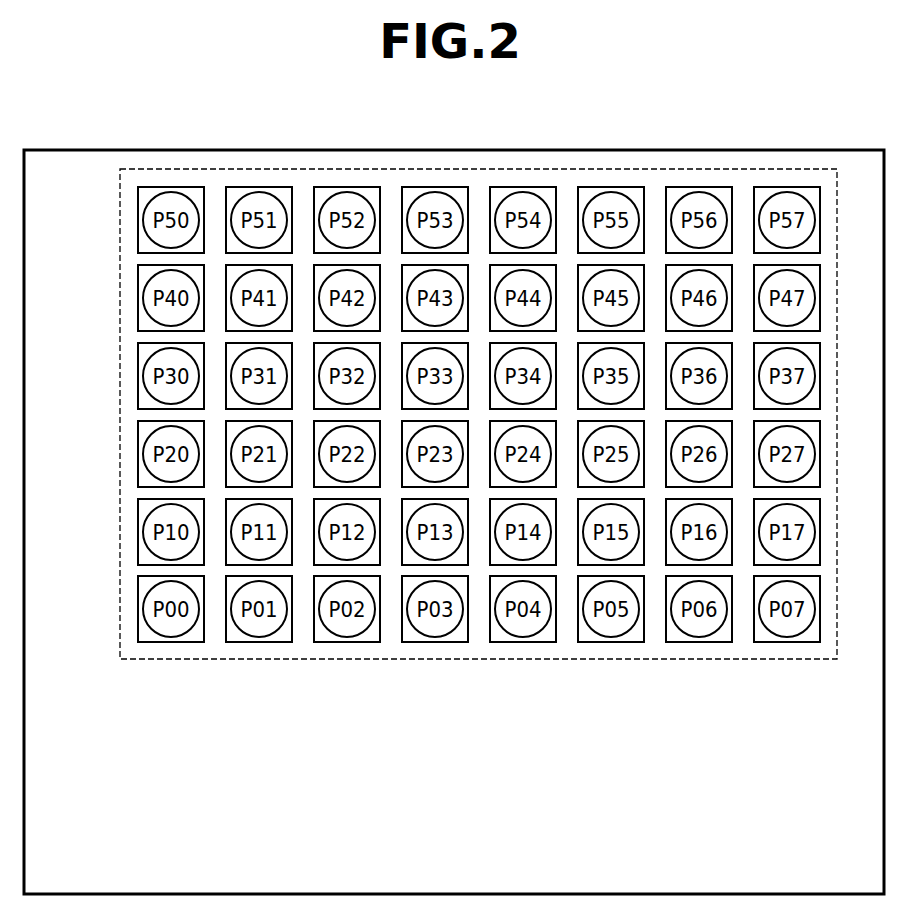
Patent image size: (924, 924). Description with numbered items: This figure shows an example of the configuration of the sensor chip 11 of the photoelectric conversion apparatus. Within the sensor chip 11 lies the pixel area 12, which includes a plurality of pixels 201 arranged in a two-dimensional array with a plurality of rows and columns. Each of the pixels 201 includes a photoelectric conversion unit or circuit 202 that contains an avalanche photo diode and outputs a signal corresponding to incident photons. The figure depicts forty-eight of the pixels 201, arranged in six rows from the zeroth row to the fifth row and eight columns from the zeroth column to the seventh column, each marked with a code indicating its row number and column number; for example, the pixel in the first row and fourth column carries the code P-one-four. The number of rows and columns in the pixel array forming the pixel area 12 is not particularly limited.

The sensor chip 11 is at (705, 149).
The pixel area 12 is at (375, 168).
The pixel 201 is at (137, 633).
The photoelectric conversion unit 202 is at (171, 630).